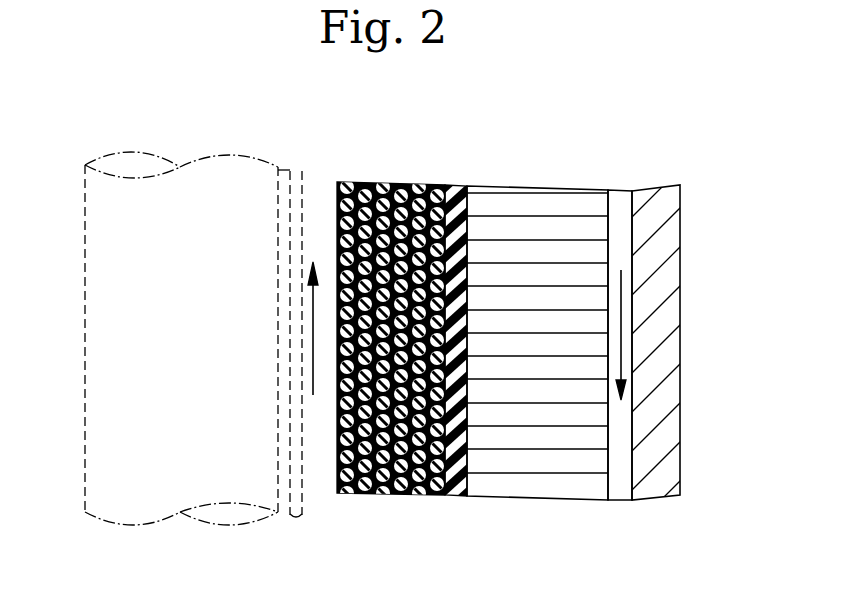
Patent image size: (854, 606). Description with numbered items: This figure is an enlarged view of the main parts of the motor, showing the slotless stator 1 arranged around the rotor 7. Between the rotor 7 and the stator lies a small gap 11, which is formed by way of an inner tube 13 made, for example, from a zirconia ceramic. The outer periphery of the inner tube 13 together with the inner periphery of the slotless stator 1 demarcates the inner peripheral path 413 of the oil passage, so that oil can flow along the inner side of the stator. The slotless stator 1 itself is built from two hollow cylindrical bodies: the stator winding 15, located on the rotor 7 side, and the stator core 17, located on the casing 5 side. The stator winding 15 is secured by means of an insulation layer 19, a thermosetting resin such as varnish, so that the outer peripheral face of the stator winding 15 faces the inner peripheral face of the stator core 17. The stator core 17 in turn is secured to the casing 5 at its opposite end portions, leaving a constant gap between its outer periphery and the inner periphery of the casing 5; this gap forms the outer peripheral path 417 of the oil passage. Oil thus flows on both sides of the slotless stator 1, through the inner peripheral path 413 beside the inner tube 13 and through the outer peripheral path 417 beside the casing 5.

The slotless stator 1 is at (472, 320).
The casing 5 is at (668, 268).
The rotor 7 is at (204, 184).
The gap 11 is at (283, 172).
The inner tube 13 is at (300, 170).
The stator winding 15 is at (400, 178).
The stator core 17 is at (508, 200).
The insulation layer 19 is at (452, 497).
The inner peripheral path 413 is at (323, 193).
The outer peripheral path 417 is at (622, 198).